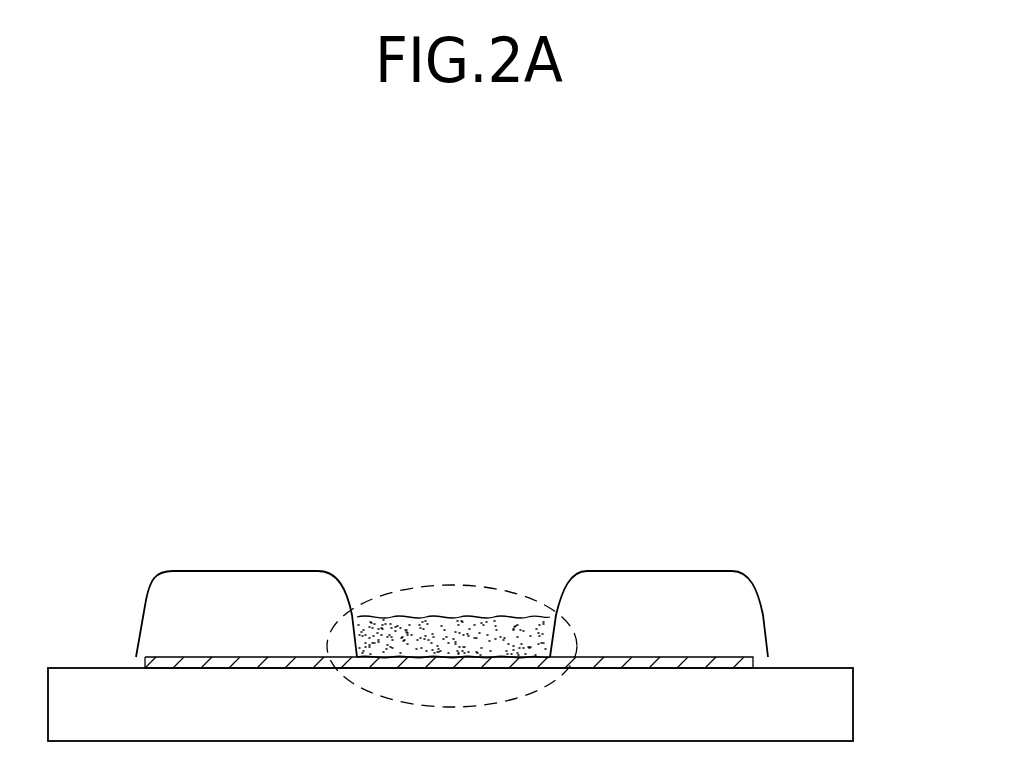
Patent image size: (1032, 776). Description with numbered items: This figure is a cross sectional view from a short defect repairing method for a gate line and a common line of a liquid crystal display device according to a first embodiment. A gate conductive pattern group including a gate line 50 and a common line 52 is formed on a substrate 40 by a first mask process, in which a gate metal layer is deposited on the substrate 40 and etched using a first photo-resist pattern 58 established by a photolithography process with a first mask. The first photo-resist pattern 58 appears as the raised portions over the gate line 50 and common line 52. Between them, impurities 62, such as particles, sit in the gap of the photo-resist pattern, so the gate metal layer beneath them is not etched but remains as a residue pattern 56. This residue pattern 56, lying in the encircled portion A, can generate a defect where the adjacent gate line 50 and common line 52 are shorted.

The substrate 40 is at (842, 708).
The gate line 50 is at (663, 660).
The common line 52 is at (260, 663).
The residue pattern 56 is at (387, 660).
The first photo-resist pattern 58 is at (747, 598).
The impurities 62 is at (462, 623).
The portion A is at (395, 588).